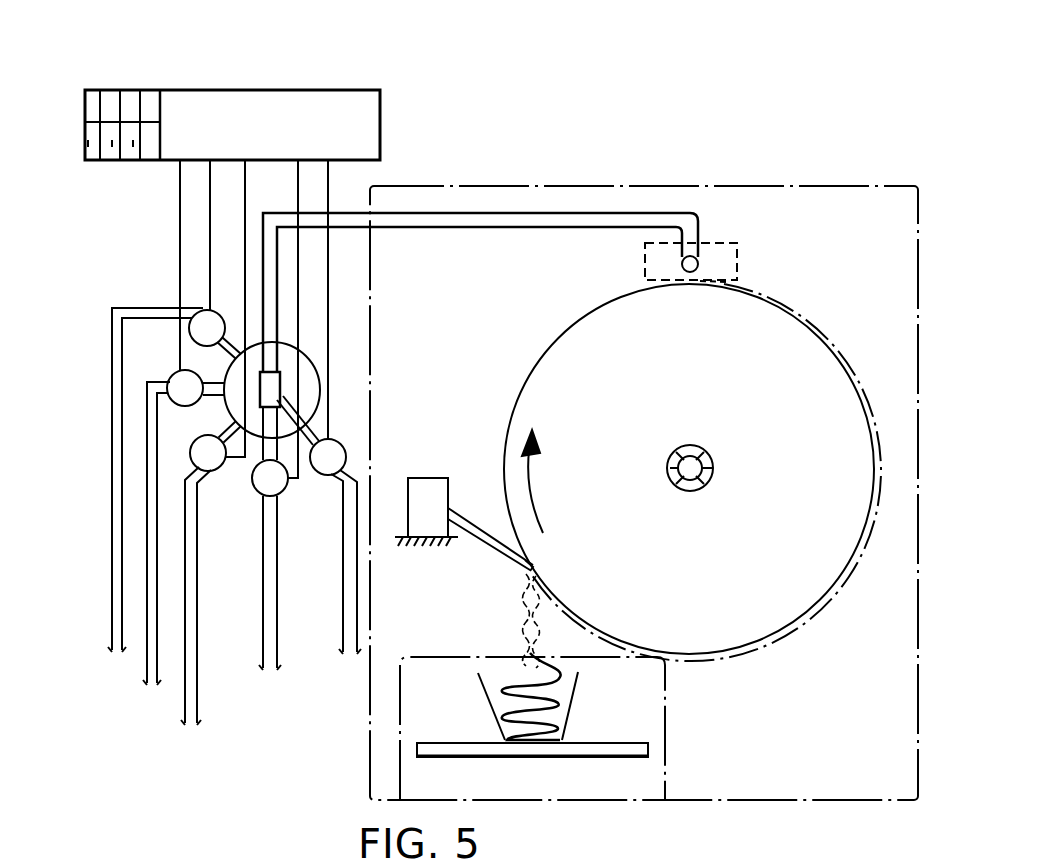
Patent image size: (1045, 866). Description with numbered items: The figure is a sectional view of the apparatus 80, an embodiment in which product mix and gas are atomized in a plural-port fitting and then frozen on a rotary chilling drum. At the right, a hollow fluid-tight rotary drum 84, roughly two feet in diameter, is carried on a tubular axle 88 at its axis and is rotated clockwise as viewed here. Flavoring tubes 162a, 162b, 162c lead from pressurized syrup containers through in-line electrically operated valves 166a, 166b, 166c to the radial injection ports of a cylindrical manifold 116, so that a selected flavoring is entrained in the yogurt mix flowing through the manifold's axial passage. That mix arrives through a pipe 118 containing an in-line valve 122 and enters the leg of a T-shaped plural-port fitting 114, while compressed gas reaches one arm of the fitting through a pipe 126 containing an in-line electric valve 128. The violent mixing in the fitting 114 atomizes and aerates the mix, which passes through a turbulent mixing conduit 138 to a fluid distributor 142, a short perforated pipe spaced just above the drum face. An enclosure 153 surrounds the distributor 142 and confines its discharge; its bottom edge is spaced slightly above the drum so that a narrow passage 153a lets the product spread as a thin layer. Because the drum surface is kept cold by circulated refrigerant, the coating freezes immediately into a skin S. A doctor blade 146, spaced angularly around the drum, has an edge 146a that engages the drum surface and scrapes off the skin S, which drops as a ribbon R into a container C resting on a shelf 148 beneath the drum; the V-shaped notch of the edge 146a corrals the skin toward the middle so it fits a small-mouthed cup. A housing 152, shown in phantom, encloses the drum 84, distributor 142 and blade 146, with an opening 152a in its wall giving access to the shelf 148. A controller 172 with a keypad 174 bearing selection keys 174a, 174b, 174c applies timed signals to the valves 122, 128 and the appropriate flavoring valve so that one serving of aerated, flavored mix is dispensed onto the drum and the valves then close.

The apparatus 80 is at (634, 150).
The rotary drum 84 is at (782, 636).
The tubular axle 88 is at (690, 445).
The plural-port fitting 114 is at (281, 390).
The cylindrical manifold 116 is at (322, 385).
The pipe 118 is at (352, 581).
The in-line valve 122 is at (318, 486).
The pipe 126 is at (263, 568).
The in-line electric valve 128 is at (252, 490).
The turbulent mixing conduit 138 is at (444, 236).
The fluid distributor 142 is at (676, 263).
The doctor blade 146 is at (463, 515).
The blade edge 146a is at (520, 571).
The shelf 148 is at (648, 748).
The housing 152 is at (717, 186).
The opening 152a is at (398, 775).
The enclosure 153 is at (737, 251).
The narrow passage 153a is at (728, 281).
The tube 162a is at (113, 633).
The tube 162b is at (148, 660).
The tube 162c is at (191, 625).
The in-line electrically operated valve 166a is at (197, 312).
The in-line electrically operated valve 166b is at (172, 376).
The in-line electrically operated valve 166c is at (199, 441).
The controller 172 is at (290, 92).
The keypad 174 is at (120, 88).
The selection key 174a is at (90, 147).
The selection key 174b is at (112, 147).
The selection key 174c is at (133, 147).
The skin S is at (800, 318).
The ribbon R is at (525, 633).
The container C is at (577, 697).